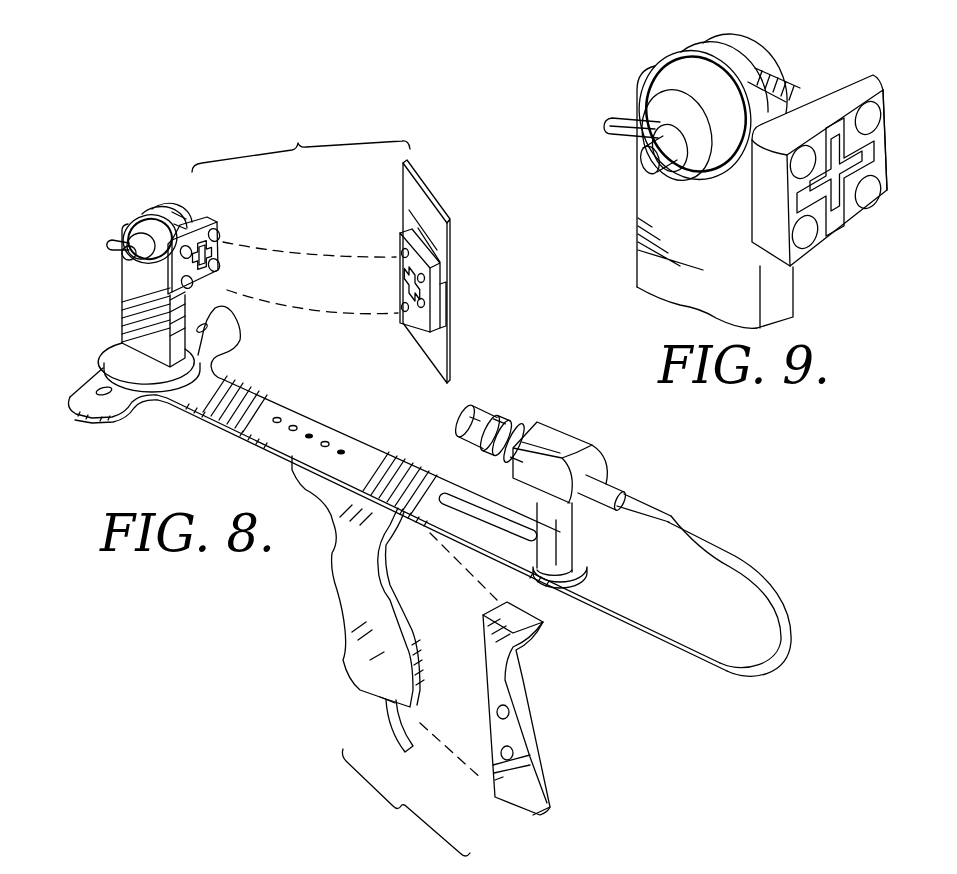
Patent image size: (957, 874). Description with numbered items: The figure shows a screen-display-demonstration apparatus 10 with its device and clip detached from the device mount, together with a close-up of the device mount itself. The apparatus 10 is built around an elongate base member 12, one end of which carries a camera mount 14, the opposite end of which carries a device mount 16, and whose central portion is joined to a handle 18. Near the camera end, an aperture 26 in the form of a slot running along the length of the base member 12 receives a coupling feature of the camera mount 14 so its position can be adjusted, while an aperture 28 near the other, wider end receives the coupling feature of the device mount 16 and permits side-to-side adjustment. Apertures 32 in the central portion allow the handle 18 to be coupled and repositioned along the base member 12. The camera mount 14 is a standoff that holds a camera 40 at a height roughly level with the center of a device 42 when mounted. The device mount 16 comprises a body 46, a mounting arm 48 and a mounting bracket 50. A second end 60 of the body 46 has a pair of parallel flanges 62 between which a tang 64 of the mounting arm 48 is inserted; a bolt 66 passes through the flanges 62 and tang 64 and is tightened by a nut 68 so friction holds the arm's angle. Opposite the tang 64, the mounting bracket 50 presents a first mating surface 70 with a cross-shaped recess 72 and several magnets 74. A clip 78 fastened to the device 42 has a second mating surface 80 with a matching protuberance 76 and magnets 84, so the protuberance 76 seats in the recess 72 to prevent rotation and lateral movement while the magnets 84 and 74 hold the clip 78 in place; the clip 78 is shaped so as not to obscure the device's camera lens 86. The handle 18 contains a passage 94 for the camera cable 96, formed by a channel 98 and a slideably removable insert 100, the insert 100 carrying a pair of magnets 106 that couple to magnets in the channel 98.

In FIG. 8, the screen-display-demonstration apparatus 10 is at (157, 172).
In FIG. 8, the base member 12 is at (263, 443).
In FIG. 8, the camera mount 14 is at (577, 523).
In FIG. 8, the device mount 16 is at (122, 316).
In FIG. 9, the device mount 16 is at (637, 268).
In FIG. 8, the handle 18 is at (333, 597).
In FIG. 8, the aperture 26 is at (478, 497).
In FIG. 8, the aperture 28 is at (113, 398).
In FIG. 8, the apertures 32 is at (283, 419).
In FIG. 8, the camera 40 is at (573, 435).
In FIG. 8, the device 42 is at (447, 224).
In FIG. 9, the body 46 is at (713, 251).
In FIG. 8, the mounting arm 48 is at (183, 222).
In FIG. 9, the mounting arm 48 is at (789, 90).
In FIG. 8, the mounting bracket 50 is at (210, 224).
In FIG. 9, the mounting bracket 50 is at (860, 74).
In FIG. 9, the second end 60 is at (613, 82).
In FIG. 9, the flanges 62 is at (668, 58).
In FIG. 9, the tang 64 is at (694, 44).
In FIG. 9, the bolt 66 is at (641, 158).
In FIG. 9, the nut 68 is at (900, 140).
In FIG. 8, the first mating surface 70 is at (222, 263).
In FIG. 9, the first mating surface 70 is at (822, 242).
In FIG. 8, the recess 72 is at (212, 272).
In FIG. 9, the recess 72 is at (850, 212).
In FIG. 8, the magnets 74 is at (221, 235).
In FIG. 9, the magnets 74 is at (877, 118).
In FIG. 8, the protuberance 76 is at (403, 286).
In FIG. 8, the clip 78 is at (447, 277).
In FIG. 8, the second mating surface 80 is at (397, 244).
In FIG. 8, the magnets 84 is at (425, 310).
In FIG. 9, the camera lens 86 is at (947, 274).
In FIG. 8, the passage 94 is at (381, 703).
In FIG. 8, the cable 96 is at (727, 542).
In FIG. 8, the channel 98 is at (414, 616).
In FIG. 8, the insert 100 is at (538, 784).
In FIG. 8, the magnets 106 is at (512, 723).